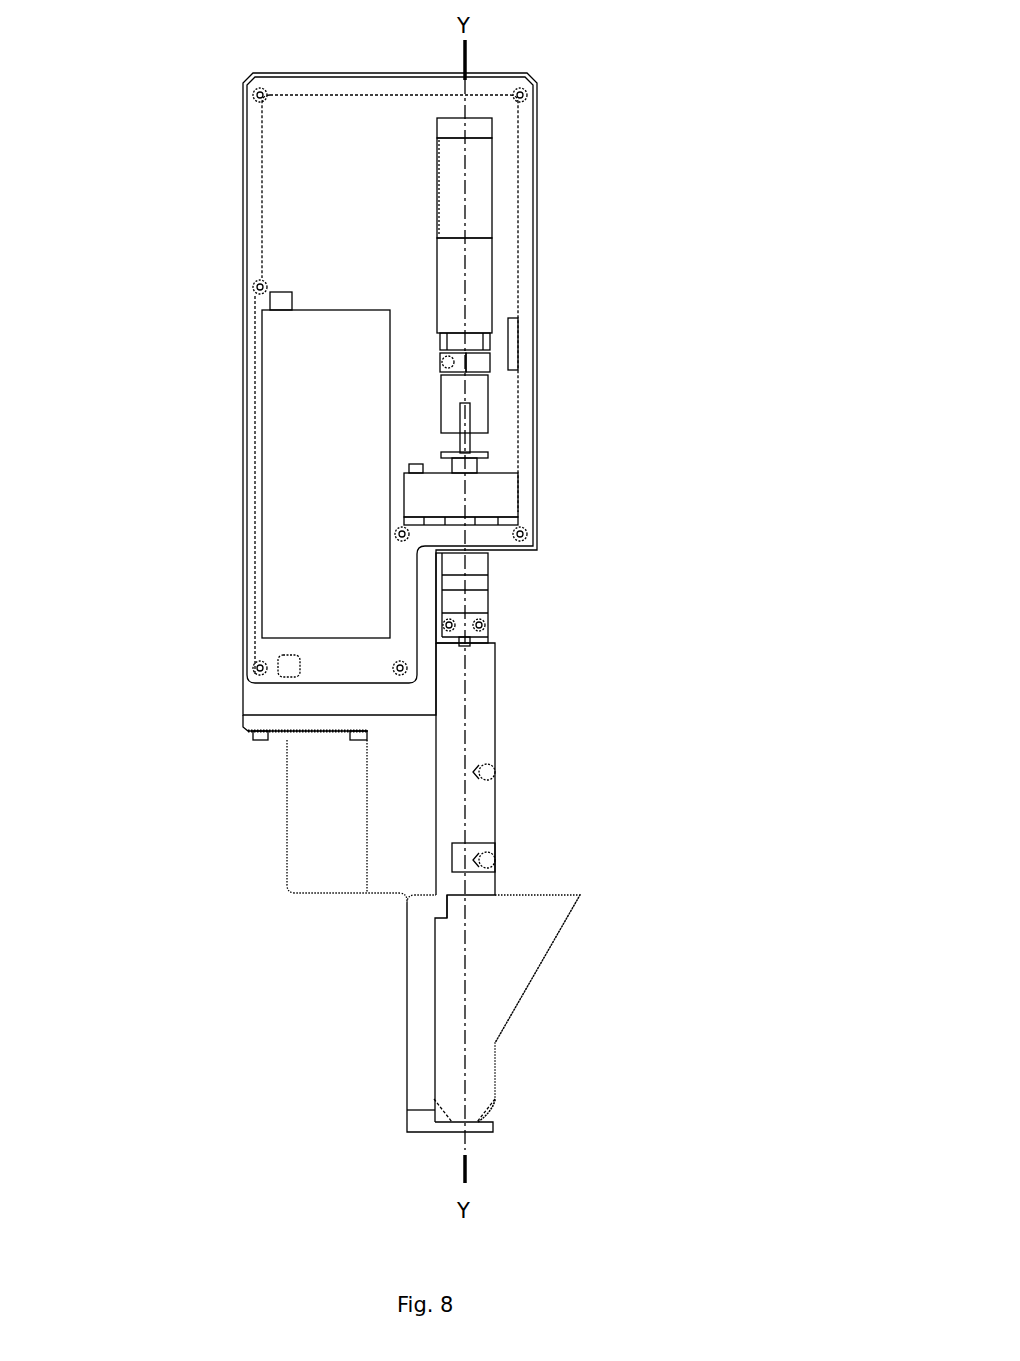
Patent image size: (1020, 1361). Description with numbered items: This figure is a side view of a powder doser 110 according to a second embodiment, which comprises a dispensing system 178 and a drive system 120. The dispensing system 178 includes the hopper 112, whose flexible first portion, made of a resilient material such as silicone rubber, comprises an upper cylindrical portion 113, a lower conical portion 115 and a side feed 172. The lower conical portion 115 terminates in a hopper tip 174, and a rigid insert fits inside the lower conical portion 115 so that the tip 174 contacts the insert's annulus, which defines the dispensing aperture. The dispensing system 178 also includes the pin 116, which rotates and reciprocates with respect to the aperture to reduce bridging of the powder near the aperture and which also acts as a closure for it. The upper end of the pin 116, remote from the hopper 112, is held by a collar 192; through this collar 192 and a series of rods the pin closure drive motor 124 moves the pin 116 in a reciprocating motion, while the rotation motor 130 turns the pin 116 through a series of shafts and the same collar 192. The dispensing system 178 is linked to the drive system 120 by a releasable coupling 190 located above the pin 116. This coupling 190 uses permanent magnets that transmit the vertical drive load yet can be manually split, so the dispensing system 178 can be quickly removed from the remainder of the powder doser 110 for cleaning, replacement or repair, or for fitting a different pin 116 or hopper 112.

The powder doser 110 is at (646, 127).
The drive system 120 is at (614, 432).
The rotation motor 130 is at (478, 160).
The pin closure drive motor 124 is at (305, 345).
The releasable coupling 190 is at (488, 600).
The collar 192 is at (487, 629).
The pin 116 is at (496, 640).
The dispensing system 178 is at (580, 880).
The upper cylindrical portion 113 is at (448, 958).
The hopper 112 is at (448, 1017).
The hopper tip 174 is at (448, 1113).
The side feed 172 is at (512, 962).
The lower conical portion 115 is at (477, 1102).